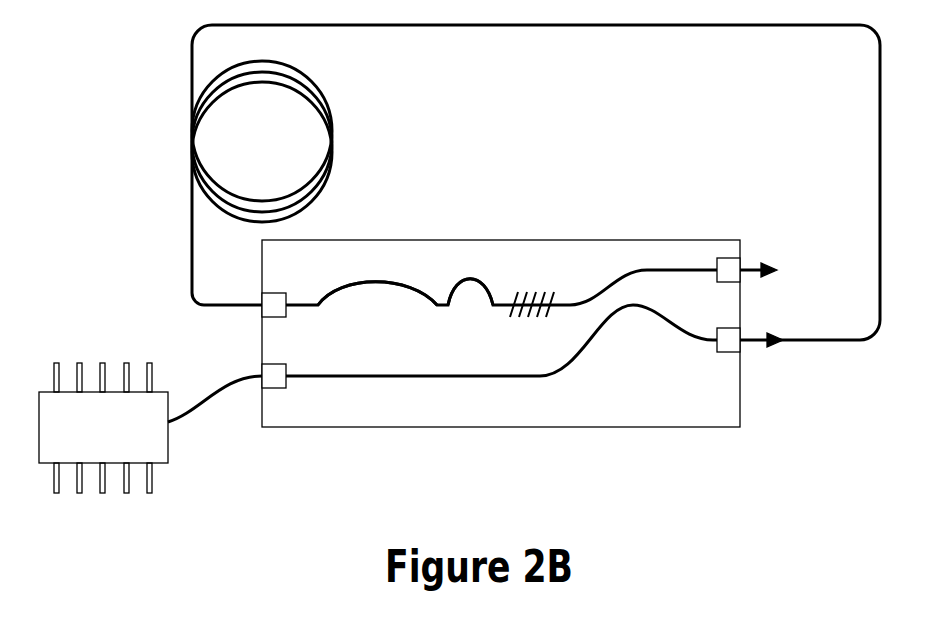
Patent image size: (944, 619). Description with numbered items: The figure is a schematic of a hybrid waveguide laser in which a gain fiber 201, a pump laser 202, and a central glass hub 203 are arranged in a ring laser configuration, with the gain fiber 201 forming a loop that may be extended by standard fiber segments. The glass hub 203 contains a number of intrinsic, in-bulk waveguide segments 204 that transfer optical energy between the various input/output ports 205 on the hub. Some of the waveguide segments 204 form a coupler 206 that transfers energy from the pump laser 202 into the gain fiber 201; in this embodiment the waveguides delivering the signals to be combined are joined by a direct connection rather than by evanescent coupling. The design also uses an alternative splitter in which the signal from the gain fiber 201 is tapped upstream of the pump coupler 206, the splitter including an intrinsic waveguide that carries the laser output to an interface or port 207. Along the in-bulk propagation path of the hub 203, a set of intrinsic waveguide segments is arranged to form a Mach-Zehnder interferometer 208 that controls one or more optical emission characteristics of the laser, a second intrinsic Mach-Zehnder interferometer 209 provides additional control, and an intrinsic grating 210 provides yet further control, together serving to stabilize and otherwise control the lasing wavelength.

The gain fiber 201 is at (468, 25).
The pump laser 202 is at (156, 458).
The glass hub 203 is at (590, 240).
The waveguide segments 204 is at (383, 376).
The input/output ports 205 is at (262, 317).
The coupler 206 is at (643, 305).
The port 207 is at (743, 260).
The Mach-Zehnder interferometer 208 is at (364, 277).
The second Mach-Zehnder interferometer 209 is at (450, 287).
The intrinsic grating 210 is at (548, 286).